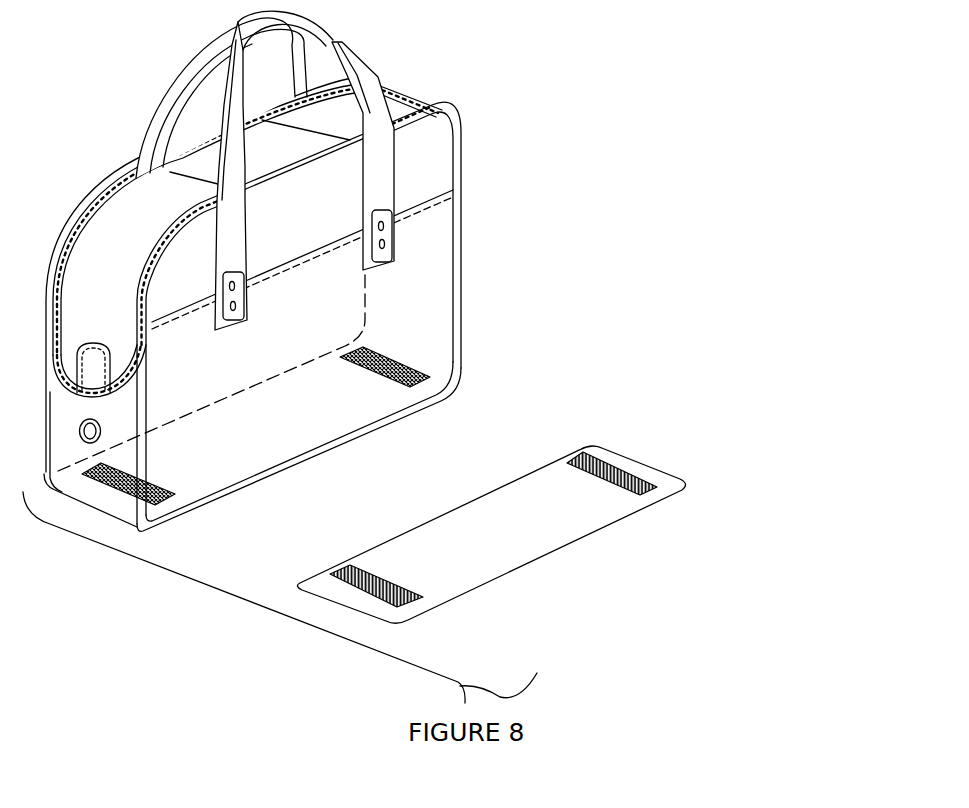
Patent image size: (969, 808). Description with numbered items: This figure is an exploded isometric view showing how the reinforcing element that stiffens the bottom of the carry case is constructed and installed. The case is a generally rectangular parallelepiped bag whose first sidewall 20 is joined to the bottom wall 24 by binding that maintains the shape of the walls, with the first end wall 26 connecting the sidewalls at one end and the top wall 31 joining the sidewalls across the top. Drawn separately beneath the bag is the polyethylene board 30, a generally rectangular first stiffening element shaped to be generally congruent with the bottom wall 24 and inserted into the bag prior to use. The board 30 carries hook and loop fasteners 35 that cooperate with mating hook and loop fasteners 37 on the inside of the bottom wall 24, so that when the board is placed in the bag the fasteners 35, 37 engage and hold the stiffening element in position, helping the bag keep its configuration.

The first sidewall 20 is at (433, 215).
The bottom wall 24 is at (276, 455).
The first end wall 26 is at (110, 497).
The polyethylene board 30 is at (675, 482).
The top wall 31 is at (287, 165).
The hook and loop fasteners 35 is at (622, 468).
The hook and loop fasteners 37 is at (154, 481).